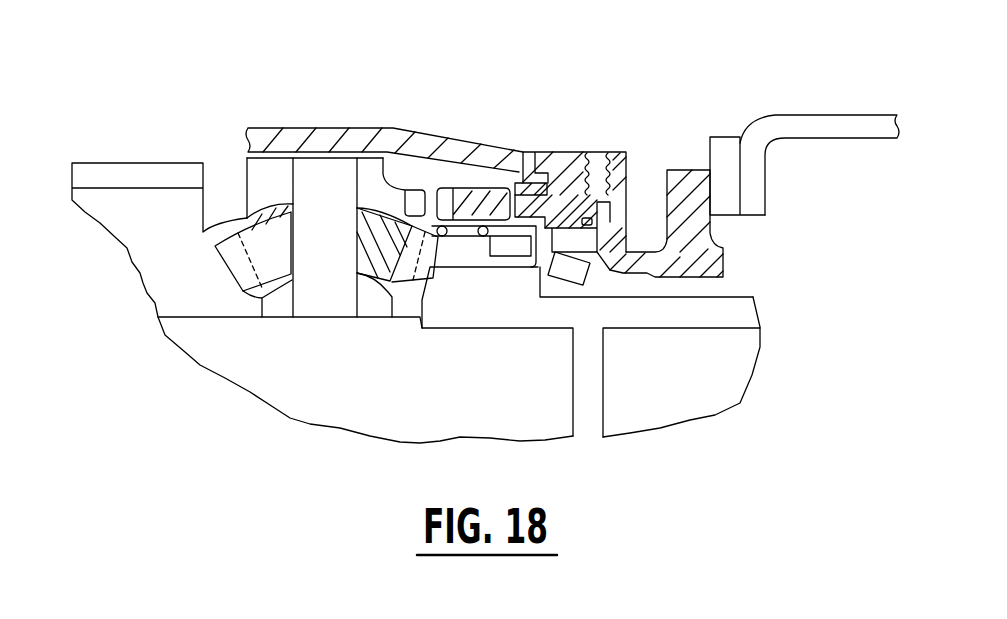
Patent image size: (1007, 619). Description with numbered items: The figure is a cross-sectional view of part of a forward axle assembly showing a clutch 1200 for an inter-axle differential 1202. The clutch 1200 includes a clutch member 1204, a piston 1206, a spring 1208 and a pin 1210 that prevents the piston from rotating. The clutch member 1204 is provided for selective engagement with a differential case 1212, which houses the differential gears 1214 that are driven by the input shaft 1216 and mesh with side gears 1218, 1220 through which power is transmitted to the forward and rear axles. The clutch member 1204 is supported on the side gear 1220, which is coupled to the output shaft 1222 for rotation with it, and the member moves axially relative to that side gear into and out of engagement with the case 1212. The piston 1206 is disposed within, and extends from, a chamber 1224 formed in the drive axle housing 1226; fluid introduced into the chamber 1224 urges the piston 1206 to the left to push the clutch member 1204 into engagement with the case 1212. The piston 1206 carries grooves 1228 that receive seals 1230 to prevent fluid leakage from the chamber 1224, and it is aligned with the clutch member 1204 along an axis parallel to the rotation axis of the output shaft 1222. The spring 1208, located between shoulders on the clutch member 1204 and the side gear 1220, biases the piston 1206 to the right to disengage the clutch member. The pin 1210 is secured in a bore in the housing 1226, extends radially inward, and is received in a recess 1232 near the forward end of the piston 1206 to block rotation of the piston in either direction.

The clutch 1200 is at (553, 50).
The inter-axle differential 1202 is at (222, 138).
The clutch member 1204 is at (473, 191).
The piston 1206 is at (572, 242).
The spring 1208 is at (405, 293).
The pin 1210 is at (540, 152).
The differential case 1212 is at (372, 182).
The differential gears 1214 is at (270, 252).
The input shaft 1216 is at (380, 375).
The side gear 1218 is at (116, 173).
The side gear 1220 is at (540, 314).
The output shaft 1222 is at (700, 397).
The chamber 1224 is at (604, 195).
The drive axle housing 1226 is at (326, 136).
The grooves 1228 is at (580, 250).
The seals 1230 is at (598, 252).
The recess 1232 is at (535, 192).